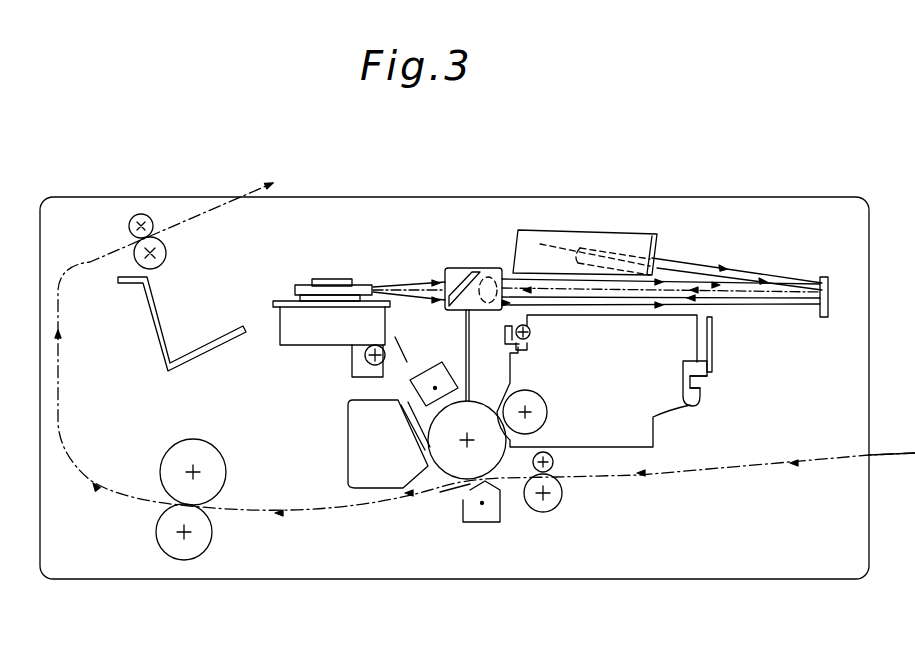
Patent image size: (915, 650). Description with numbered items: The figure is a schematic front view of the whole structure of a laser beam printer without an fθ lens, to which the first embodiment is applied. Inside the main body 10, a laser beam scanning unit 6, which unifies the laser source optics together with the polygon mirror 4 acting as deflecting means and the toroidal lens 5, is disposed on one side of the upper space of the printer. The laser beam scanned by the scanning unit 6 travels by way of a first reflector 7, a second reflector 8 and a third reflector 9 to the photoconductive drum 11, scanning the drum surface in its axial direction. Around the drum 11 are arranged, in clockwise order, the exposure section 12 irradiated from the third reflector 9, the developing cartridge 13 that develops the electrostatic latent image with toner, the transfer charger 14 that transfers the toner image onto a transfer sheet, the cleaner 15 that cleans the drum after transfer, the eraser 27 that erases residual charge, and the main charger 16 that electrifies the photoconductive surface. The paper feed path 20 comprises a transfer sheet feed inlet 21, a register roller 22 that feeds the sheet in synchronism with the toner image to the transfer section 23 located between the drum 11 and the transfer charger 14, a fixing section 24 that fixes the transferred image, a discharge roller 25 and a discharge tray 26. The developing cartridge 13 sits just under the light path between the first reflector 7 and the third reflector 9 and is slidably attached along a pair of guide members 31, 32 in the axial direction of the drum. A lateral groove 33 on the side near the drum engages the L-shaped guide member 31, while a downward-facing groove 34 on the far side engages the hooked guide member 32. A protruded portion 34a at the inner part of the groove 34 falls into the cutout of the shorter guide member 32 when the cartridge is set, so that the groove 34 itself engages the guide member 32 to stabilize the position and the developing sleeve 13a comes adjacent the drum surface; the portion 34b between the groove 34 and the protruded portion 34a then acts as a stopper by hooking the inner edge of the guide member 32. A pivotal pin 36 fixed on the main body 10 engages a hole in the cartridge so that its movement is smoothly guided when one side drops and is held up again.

The polygon mirror 4 is at (358, 282).
The toroidal lens 5 is at (462, 274).
The laser beam scanning unit 6 is at (393, 275).
The first reflector 7 is at (828, 316).
The second reflector 8 is at (608, 238).
The third reflector 9 is at (480, 262).
The main body 10 is at (708, 195).
The photoconductive drum 11 is at (462, 438).
The exposure section 12 is at (478, 392).
The developing cartridge 13 is at (664, 407).
The developing sleeve 13a is at (542, 398).
The transfer charger 14 is at (470, 524).
The cleaner 15 is at (360, 464).
The main charger 16 is at (432, 372).
The paper feed path 20 is at (733, 474).
The transfer sheet feed inlet 21 is at (868, 455).
The register roller 22 is at (546, 512).
The transfer section 23 is at (470, 484).
The fixing section 24 is at (192, 552).
The discharge roller 25 is at (150, 214).
The discharge tray 26 is at (220, 337).
The eraser 27 is at (362, 358).
The L-shaped guide member 31 is at (504, 336).
The hooked guide member 32 is at (713, 340).
The lateral groove 33 is at (527, 348).
The groove 34 is at (682, 366).
The protruded portion 34a is at (700, 396).
The stopper portion 34b is at (700, 378).
The pivotal pin 36 is at (531, 331).